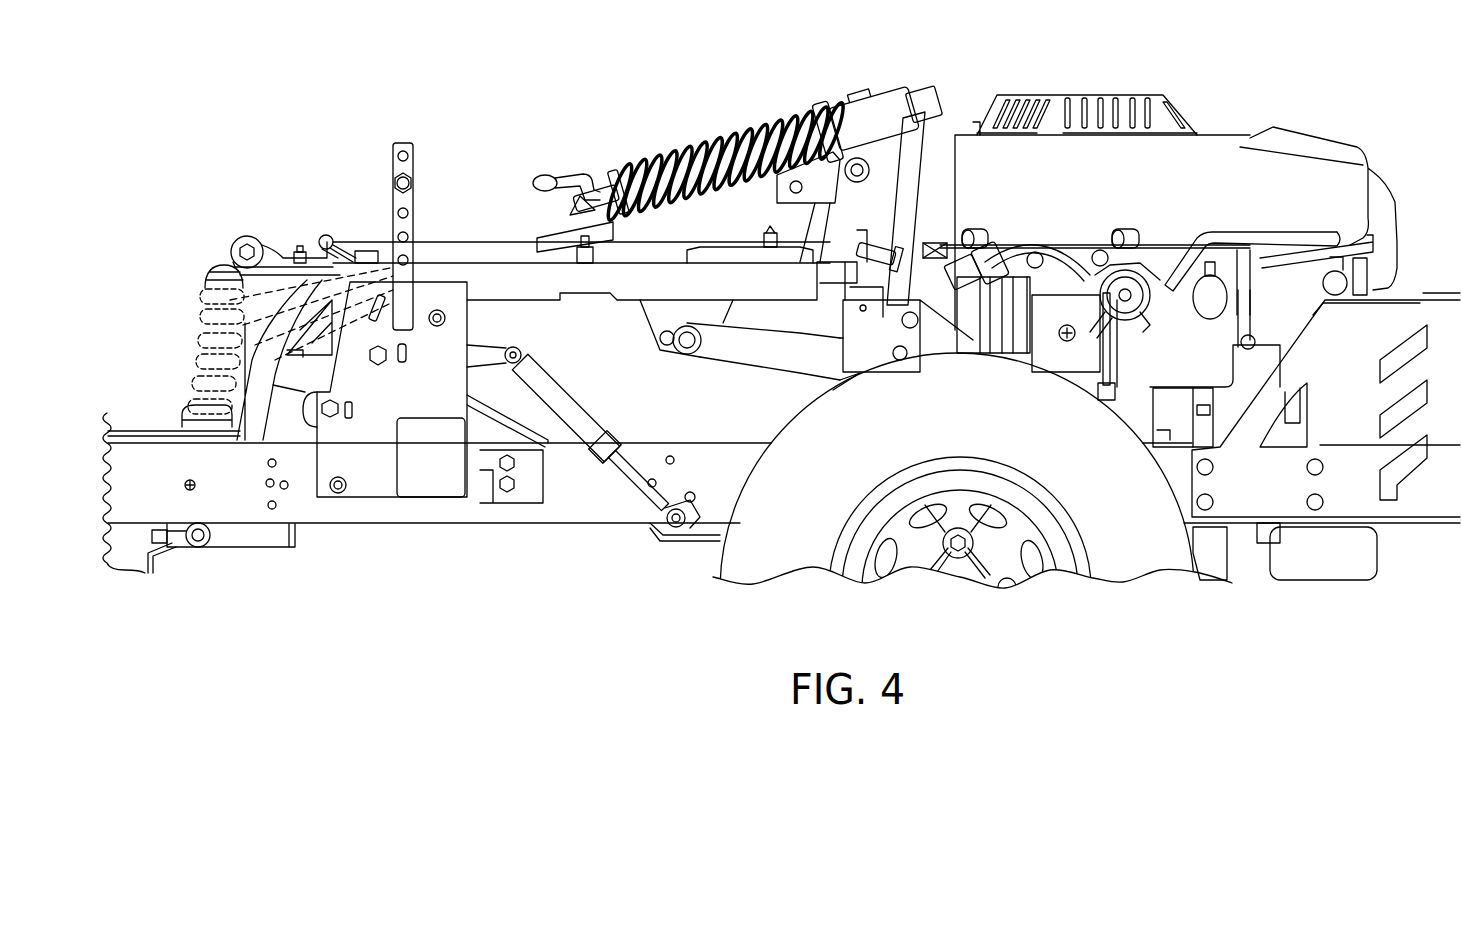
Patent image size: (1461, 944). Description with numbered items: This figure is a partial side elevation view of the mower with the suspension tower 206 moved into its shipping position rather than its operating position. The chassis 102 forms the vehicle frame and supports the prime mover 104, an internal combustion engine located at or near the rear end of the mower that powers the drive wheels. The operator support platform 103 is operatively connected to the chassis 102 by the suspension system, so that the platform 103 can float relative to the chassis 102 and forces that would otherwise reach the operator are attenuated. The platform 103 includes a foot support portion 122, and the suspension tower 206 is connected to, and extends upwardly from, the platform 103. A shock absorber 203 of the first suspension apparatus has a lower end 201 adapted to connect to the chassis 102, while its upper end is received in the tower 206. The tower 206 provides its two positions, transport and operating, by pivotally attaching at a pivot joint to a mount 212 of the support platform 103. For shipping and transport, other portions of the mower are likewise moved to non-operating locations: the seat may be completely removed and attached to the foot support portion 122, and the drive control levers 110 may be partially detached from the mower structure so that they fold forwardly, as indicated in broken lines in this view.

The chassis 102 is at (572, 518).
The operator support platform 103 is at (262, 427).
The prime mover 104 is at (1222, 133).
The drive control levers 110 is at (155, 331).
The foot support portion 122 is at (140, 432).
The lower end 201 is at (927, 102).
The shock absorber 203 is at (722, 145).
The suspension tower 206 is at (563, 223).
The mount 212 is at (898, 188).